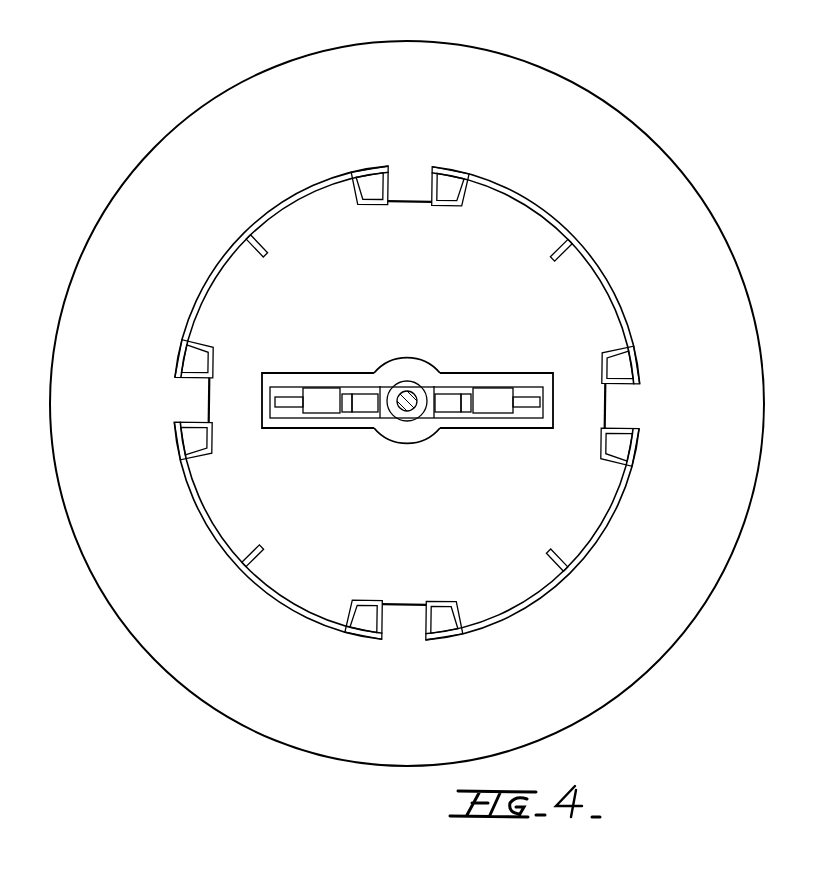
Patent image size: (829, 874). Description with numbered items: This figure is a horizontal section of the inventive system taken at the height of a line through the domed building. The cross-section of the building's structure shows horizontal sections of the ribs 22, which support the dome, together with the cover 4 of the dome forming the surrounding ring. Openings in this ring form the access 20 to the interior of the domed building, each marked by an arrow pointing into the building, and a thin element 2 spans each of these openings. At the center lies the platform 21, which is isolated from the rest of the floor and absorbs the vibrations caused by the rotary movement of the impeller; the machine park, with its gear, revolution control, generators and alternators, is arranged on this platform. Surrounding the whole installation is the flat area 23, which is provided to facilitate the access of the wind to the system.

The fuse element / thin conductor across notch 2 is at (212, 389).
The cover of the dome 4 is at (515, 186).
The access 20 is at (410, 142).
The platform 21 is at (410, 360).
The ribs 22 is at (575, 247).
The flat area 23 is at (270, 83).